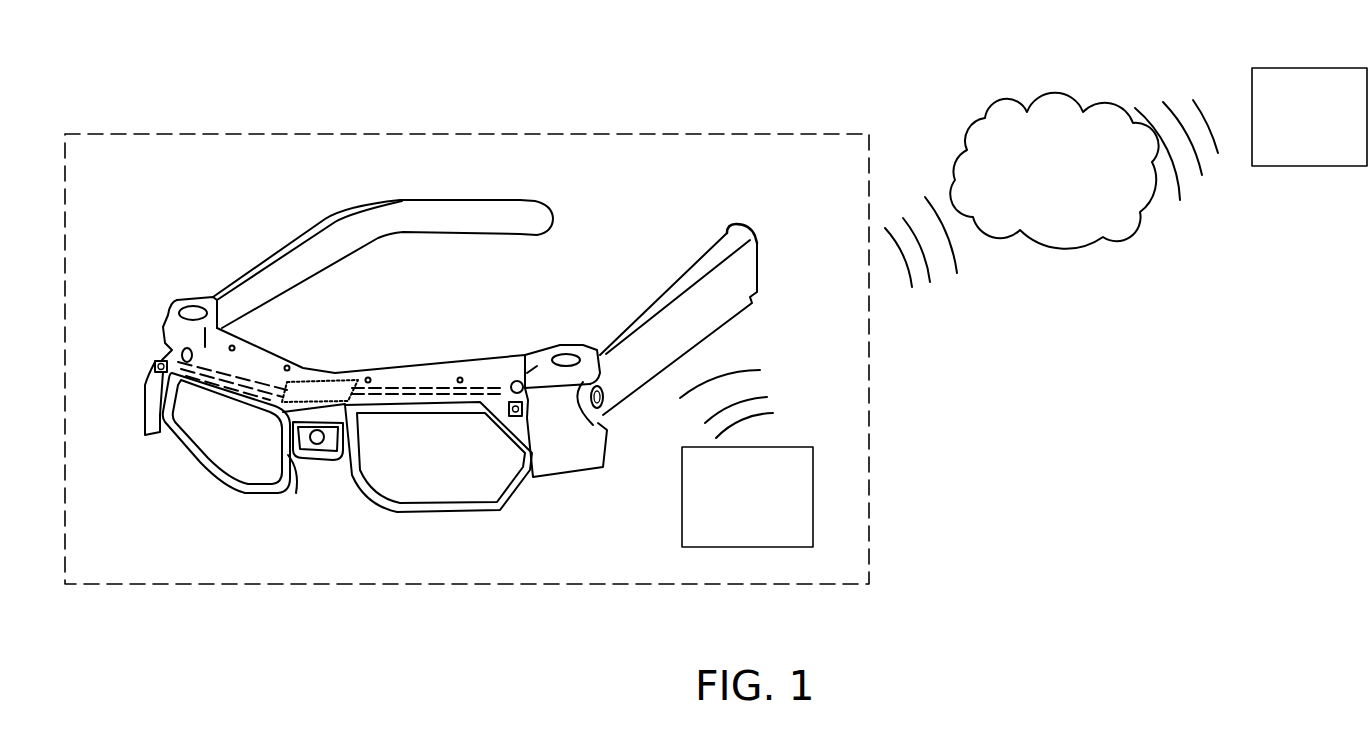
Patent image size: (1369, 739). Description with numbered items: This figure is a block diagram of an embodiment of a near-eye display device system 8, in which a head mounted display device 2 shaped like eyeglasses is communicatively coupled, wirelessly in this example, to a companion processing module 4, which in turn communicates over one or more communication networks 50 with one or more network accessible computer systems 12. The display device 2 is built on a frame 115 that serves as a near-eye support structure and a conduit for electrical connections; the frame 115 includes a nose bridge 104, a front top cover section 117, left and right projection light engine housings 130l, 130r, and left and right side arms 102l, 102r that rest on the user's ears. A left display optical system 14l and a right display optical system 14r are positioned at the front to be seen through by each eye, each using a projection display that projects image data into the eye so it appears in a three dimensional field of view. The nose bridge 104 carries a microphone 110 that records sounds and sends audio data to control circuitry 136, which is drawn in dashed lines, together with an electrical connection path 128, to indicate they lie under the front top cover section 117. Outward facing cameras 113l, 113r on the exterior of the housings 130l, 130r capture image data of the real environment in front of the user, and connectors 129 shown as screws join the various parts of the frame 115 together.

The head mounted display device 2 is at (666, 212).
The mixed reality display system 8 is at (870, 538).
The network accessible computer systems 12 is at (1309, 117).
The communication networks 50 is at (1051, 190).
The companion processing module 4 is at (746, 458).
The right side arm 102r is at (340, 214).
The left side arm 102l is at (667, 297).
The frame 115 is at (518, 200).
The front top cover section 117 is at (423, 371).
The connectors 129 is at (198, 302).
The dashed electrical connection line 128 is at (258, 380).
The control circuitry 136 is at (333, 394).
The right outward facing camera 113r is at (157, 357).
The left outward facing camera 113l is at (530, 418).
The right projection light engine housing 130r is at (153, 415).
The left projection light engine housing 130l is at (597, 453).
The right display optical system 14r is at (227, 440).
The left display optical system 14l is at (422, 473).
The nose bridge 104 is at (333, 410).
The microphone 110 is at (317, 445).